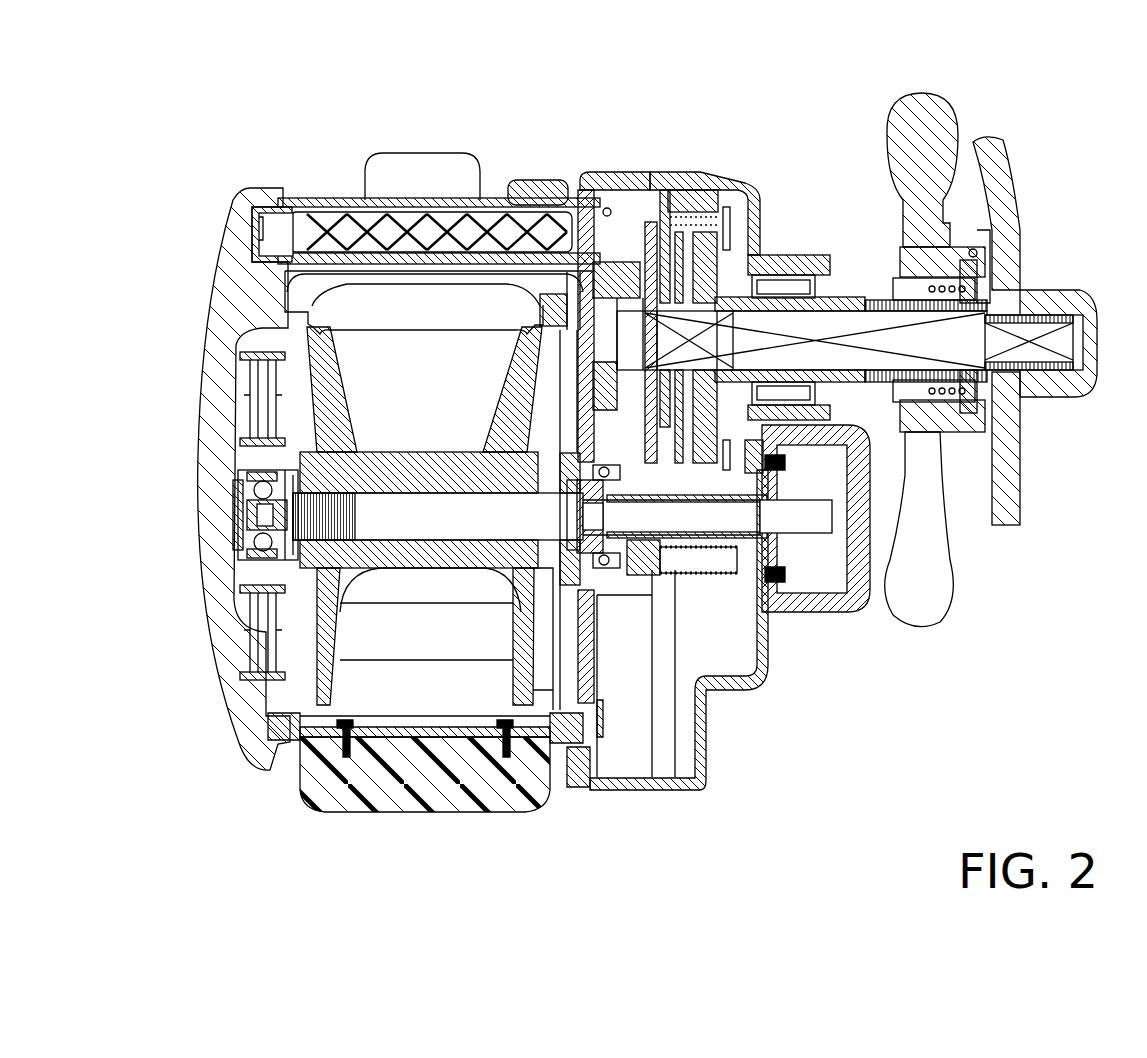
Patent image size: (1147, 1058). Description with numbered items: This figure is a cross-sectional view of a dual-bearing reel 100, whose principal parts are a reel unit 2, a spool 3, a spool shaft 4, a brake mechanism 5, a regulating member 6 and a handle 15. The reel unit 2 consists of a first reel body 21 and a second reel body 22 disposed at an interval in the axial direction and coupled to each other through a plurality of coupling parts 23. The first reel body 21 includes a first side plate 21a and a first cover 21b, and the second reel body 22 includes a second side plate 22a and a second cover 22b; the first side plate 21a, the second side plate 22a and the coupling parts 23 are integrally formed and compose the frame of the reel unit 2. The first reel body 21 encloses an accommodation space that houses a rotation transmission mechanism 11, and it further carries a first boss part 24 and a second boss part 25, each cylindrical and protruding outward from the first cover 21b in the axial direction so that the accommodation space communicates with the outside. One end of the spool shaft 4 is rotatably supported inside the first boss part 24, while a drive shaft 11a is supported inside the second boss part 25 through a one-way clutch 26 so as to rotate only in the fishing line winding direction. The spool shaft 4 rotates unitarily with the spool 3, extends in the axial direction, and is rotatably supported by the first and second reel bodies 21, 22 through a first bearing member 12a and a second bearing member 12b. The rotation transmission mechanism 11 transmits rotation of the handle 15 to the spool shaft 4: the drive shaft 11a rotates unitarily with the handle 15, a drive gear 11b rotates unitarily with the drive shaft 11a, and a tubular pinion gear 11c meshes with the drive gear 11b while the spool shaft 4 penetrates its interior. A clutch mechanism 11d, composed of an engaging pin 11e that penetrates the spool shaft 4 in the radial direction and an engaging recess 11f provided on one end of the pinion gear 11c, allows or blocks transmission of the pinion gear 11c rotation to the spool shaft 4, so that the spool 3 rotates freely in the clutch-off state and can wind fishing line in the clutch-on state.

The dual-bearing reel 100 is at (587, 477).
The reel unit 2 is at (721, 814).
The spool 3 is at (431, 584).
The spool shaft 4 is at (394, 528).
The brake mechanism 5 is at (838, 600).
The regulating member 6 is at (865, 525).
The rotation transmission mechanism 11 is at (747, 195).
The drive shaft 11a is at (826, 330).
The drive gear 11b is at (703, 198).
The pinion gear 11c is at (745, 580).
The clutch mechanism 11d is at (577, 575).
The engaging pin 11e is at (488, 462).
The engaging recess 11f is at (552, 520).
The first bearing member 12a is at (868, 487).
The second bearing member 12b is at (240, 468).
The handle 15 is at (1011, 543).
The first reel body 21 is at (652, 806).
The first side plate 21a is at (618, 172).
The first cover 21b is at (678, 172).
The second reel body 22 is at (268, 785).
The second side plate 22a is at (270, 186).
The second cover 22b is at (240, 400).
The coupling parts 23 is at (485, 640).
The first boss part 24 is at (770, 620).
The second boss part 25 is at (778, 252).
The one-way clutch 26 is at (803, 280).